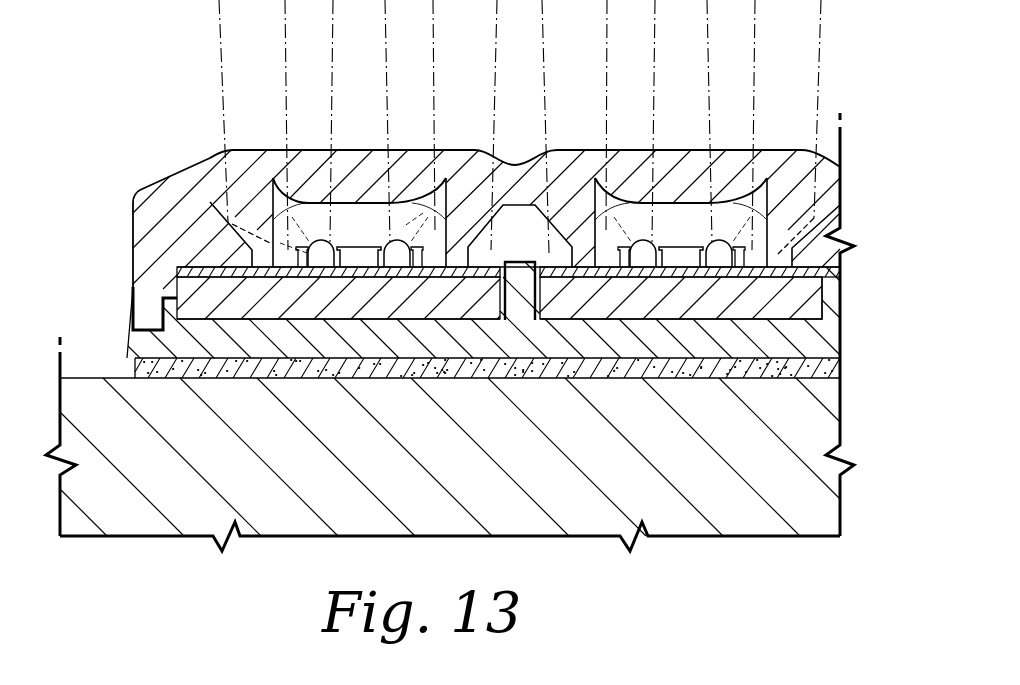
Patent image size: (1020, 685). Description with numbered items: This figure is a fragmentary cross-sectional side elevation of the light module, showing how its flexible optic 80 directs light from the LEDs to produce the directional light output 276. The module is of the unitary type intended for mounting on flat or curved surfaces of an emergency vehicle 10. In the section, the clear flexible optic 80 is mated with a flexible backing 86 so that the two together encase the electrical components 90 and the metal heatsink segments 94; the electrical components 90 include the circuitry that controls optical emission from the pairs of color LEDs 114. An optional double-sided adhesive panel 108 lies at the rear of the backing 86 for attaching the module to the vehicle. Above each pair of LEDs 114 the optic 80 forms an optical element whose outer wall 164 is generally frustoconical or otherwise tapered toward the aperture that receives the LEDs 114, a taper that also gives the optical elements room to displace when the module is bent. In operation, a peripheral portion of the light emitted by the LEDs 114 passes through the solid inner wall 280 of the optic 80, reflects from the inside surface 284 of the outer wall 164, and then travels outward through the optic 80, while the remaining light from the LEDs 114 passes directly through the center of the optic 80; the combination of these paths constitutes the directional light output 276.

The emergency vehicle 10 is at (172, 483).
The flexible optic 80 is at (178, 168).
The flexible backing 86 is at (827, 340).
The electrical components 90 is at (205, 268).
The heatsink segments 94 is at (203, 296).
The double-sided adhesive panel 108 is at (778, 370).
The color LEDs 114 is at (392, 250).
The outer wall 164 is at (218, 222).
The directional light output 276 is at (210, 28).
The solid inner wall 280 is at (327, 203).
The inside surface 284 is at (210, 202).